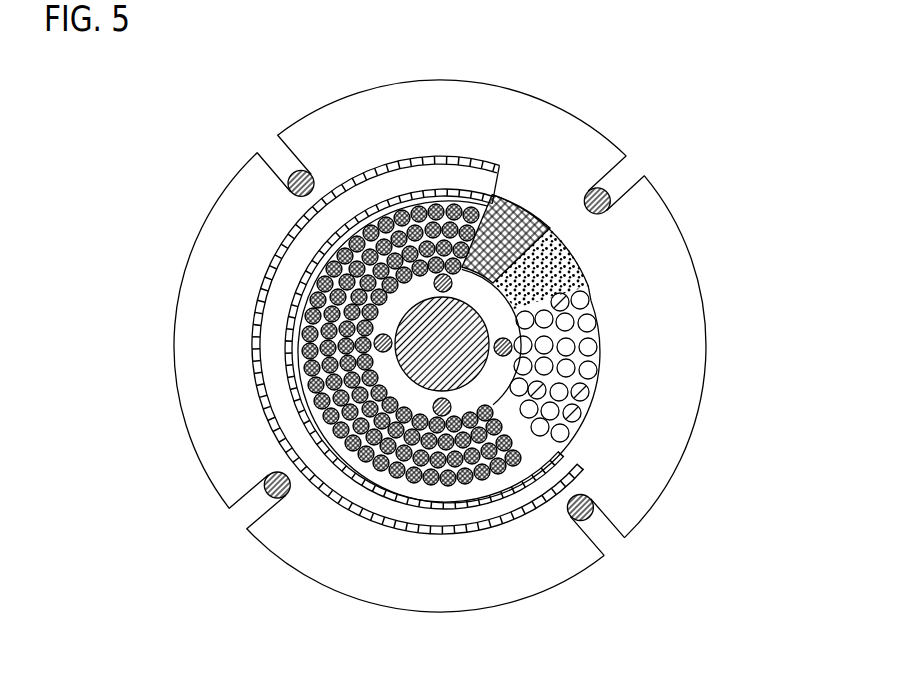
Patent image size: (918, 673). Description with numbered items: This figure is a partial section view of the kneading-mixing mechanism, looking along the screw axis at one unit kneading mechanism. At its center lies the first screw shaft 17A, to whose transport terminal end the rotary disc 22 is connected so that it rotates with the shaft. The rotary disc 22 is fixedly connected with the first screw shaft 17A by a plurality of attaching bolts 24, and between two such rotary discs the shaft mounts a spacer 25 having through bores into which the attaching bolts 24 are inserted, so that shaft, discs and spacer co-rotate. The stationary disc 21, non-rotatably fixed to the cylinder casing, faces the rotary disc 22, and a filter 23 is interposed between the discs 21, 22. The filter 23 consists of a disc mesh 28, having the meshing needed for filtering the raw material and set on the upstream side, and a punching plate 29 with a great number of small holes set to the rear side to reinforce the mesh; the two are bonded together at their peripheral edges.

The first screw shaft 17A is at (413, 323).
The stationary disc 21 is at (598, 333).
The rotary disc 22 is at (307, 312).
The filter 23 is at (610, 215).
The attaching bolts 24 is at (583, 393).
The spacer 25 is at (493, 405).
The disc mesh 28 is at (536, 215).
The punching plate 29 is at (577, 260).